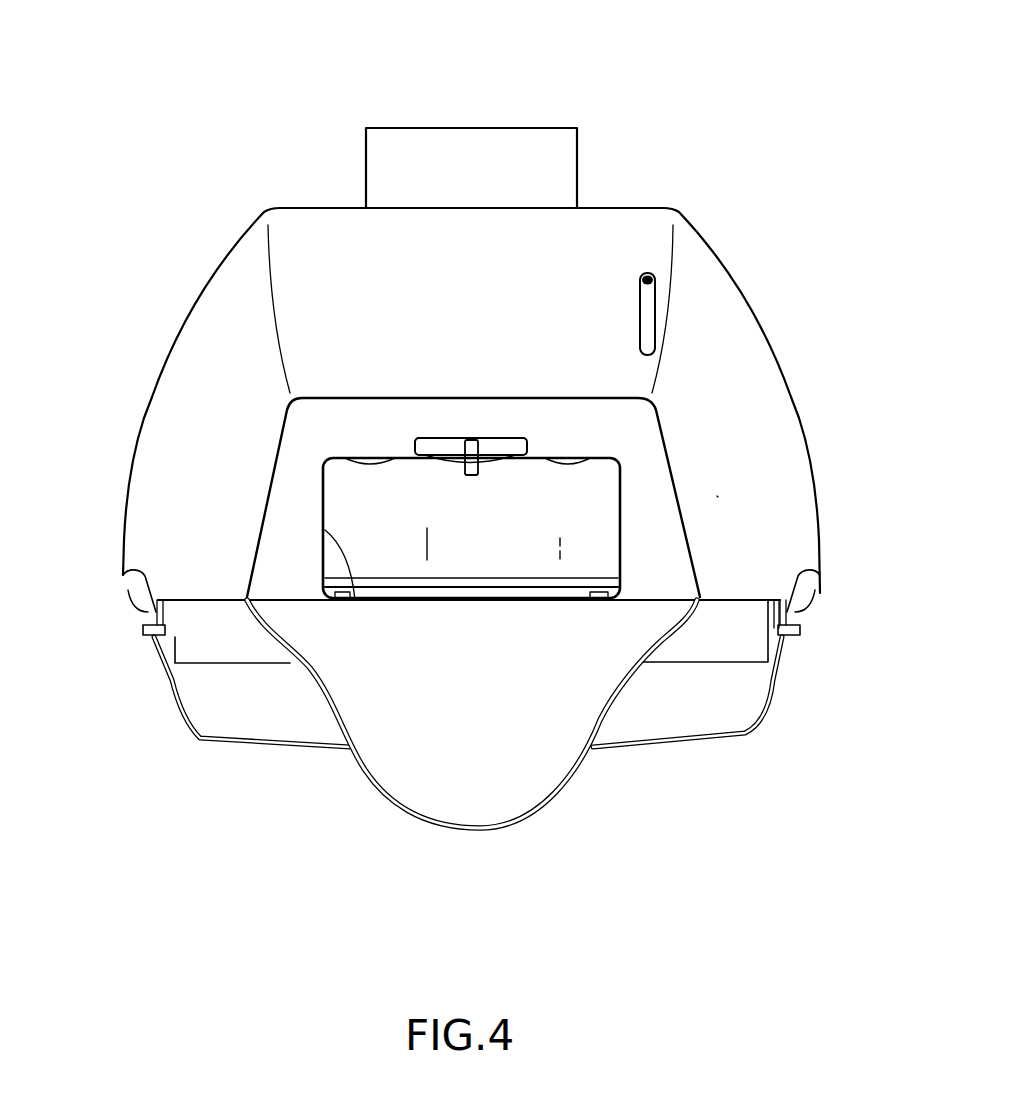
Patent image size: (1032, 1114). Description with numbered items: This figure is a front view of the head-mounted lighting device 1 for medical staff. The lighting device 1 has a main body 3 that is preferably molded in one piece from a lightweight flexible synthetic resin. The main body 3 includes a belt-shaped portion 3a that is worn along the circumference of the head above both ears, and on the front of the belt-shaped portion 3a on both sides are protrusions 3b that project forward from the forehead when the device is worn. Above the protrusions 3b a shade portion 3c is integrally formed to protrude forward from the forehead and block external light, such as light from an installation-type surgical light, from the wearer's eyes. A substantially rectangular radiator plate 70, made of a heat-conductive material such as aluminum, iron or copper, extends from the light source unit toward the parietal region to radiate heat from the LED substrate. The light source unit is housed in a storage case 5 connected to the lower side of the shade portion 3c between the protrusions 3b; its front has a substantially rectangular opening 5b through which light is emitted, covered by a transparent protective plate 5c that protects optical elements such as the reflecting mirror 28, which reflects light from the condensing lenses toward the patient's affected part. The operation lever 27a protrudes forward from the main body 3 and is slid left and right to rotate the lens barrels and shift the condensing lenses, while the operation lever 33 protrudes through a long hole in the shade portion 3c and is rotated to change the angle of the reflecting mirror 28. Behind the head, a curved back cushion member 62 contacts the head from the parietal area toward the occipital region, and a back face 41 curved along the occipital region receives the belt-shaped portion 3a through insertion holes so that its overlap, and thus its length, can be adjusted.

The lighting device 1 is at (683, 86).
The radiator plate 70 is at (488, 140).
The main body 3 is at (777, 322).
The belt-shaped portion 3a is at (143, 440).
The protrusion 3b is at (717, 496).
The shade portion 3c is at (327, 257).
The operation lever 33 is at (647, 300).
The lens barrel rotation operation member 27a is at (470, 436).
The storage case 5 is at (283, 523).
The opening 5b is at (325, 530).
The transparent protective plate 5c is at (427, 528).
The reflecting mirror 28 is at (560, 538).
The back face 41 is at (262, 718).
The back cushion member 62 is at (462, 782).